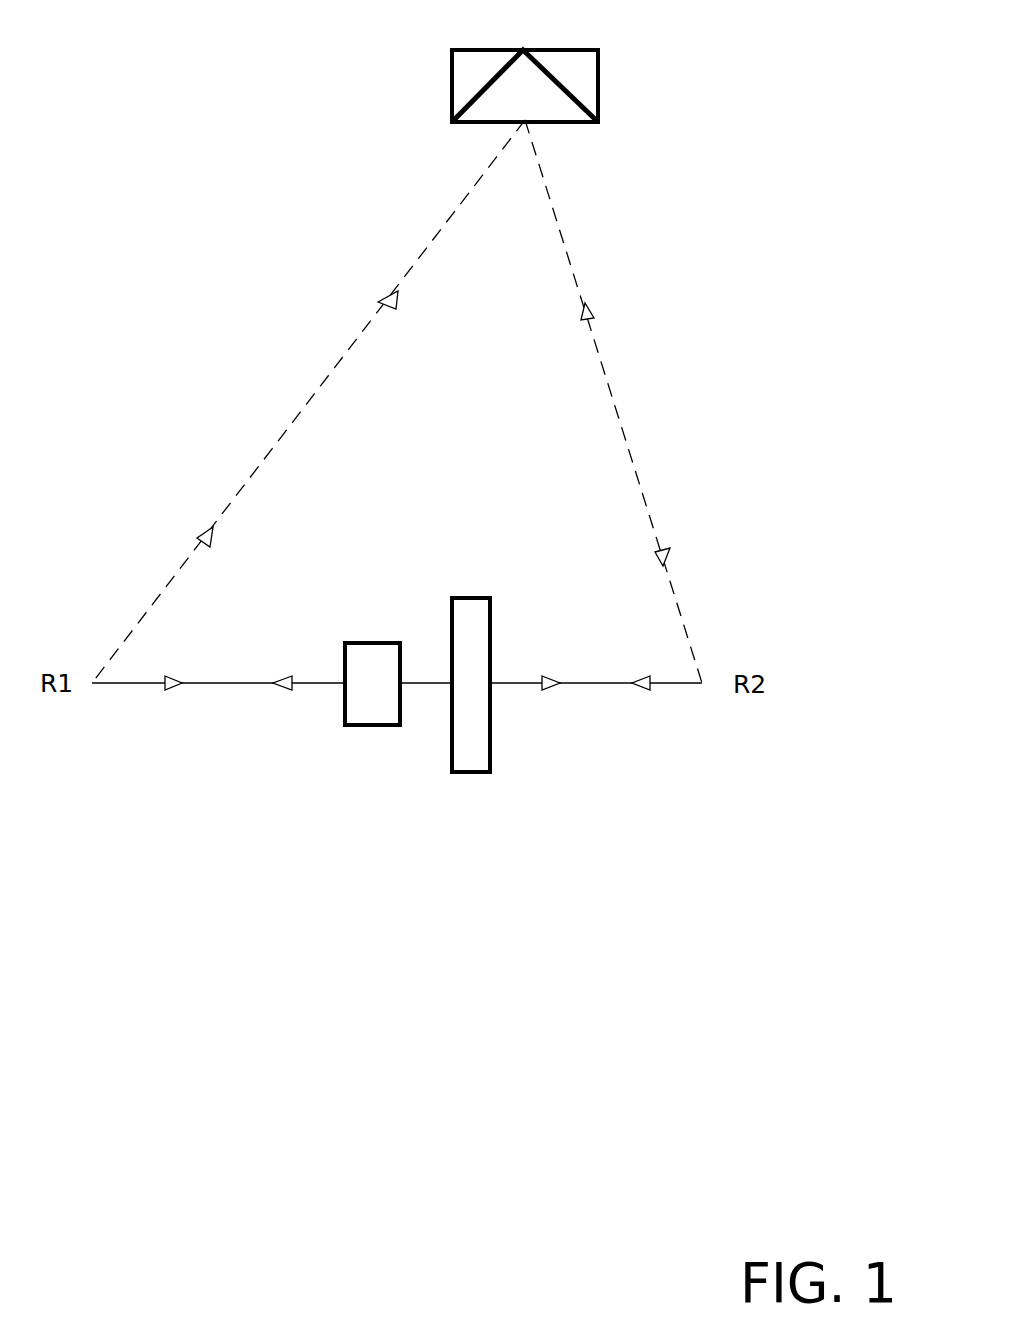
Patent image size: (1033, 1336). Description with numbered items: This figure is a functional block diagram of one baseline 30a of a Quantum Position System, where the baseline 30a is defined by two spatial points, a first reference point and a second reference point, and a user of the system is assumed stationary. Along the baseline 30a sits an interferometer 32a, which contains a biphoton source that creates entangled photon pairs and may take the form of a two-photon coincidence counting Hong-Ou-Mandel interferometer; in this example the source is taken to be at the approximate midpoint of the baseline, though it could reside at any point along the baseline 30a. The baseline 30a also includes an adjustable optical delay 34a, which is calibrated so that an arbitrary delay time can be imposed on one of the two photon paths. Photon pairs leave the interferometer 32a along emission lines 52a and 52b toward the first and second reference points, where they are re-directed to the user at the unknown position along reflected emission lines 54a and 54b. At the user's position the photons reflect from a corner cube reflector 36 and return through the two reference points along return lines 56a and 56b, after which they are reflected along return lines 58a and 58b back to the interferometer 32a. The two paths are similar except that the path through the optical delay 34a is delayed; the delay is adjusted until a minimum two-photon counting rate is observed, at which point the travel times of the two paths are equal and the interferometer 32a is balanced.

The baseline 30a is at (620, 799).
The interferometer 32a is at (372, 727).
The adjustable optical delay 34a is at (470, 774).
The corner cube reflector 36 is at (598, 97).
The emission line 52a is at (162, 693).
The emission line 52b is at (652, 692).
The reflected emission line 54a is at (395, 308).
The reflected emission line 54b is at (593, 318).
The return line 56a is at (213, 542).
The return line 56b is at (670, 553).
The return line 58a is at (290, 693).
The return line 58b is at (545, 692).